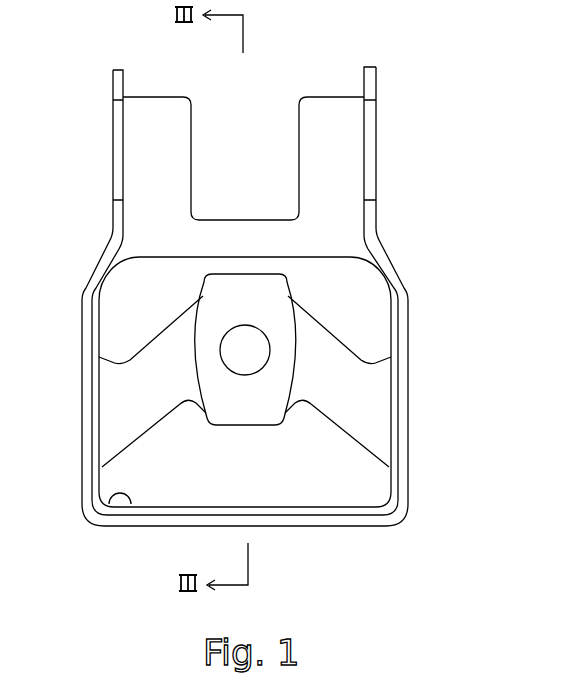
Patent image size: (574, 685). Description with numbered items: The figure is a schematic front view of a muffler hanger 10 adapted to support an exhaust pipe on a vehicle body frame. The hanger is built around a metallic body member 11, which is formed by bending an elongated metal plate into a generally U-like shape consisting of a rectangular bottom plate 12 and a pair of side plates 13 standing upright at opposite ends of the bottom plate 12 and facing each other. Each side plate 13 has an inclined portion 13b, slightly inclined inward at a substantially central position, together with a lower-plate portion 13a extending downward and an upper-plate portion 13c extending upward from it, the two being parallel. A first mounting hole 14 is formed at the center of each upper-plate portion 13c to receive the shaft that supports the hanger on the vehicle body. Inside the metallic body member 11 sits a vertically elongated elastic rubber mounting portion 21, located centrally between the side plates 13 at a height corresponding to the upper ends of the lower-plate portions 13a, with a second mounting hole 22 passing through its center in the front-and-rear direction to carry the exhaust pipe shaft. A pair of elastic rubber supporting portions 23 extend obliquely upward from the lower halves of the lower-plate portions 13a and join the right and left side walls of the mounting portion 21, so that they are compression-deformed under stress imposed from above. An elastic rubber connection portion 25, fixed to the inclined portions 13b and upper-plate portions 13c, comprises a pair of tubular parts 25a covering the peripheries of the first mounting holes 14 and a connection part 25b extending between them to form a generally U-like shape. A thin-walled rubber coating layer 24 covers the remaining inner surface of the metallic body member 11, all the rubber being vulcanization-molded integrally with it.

The muffler hanger 10 is at (393, 103).
The metallic body member 11 is at (372, 72).
The bottom plate 12 is at (353, 526).
The side plate 13 is at (75, 362).
The lower-plate portion 13a is at (410, 435).
The inclined portion 13b is at (393, 260).
The upper-plate portion 13c is at (377, 160).
The first mounting hole 14 is at (110, 120).
The elastic rubber mounting portion 21 is at (268, 427).
The second mounting hole 22 is at (228, 359).
The elastic rubber supporting portion 23 is at (148, 430).
The rubber coating layer 24 is at (126, 507).
The elastic rubber connection portion 25 is at (187, 103).
The tubular part 25a is at (152, 96).
The connection part 25b is at (243, 219).